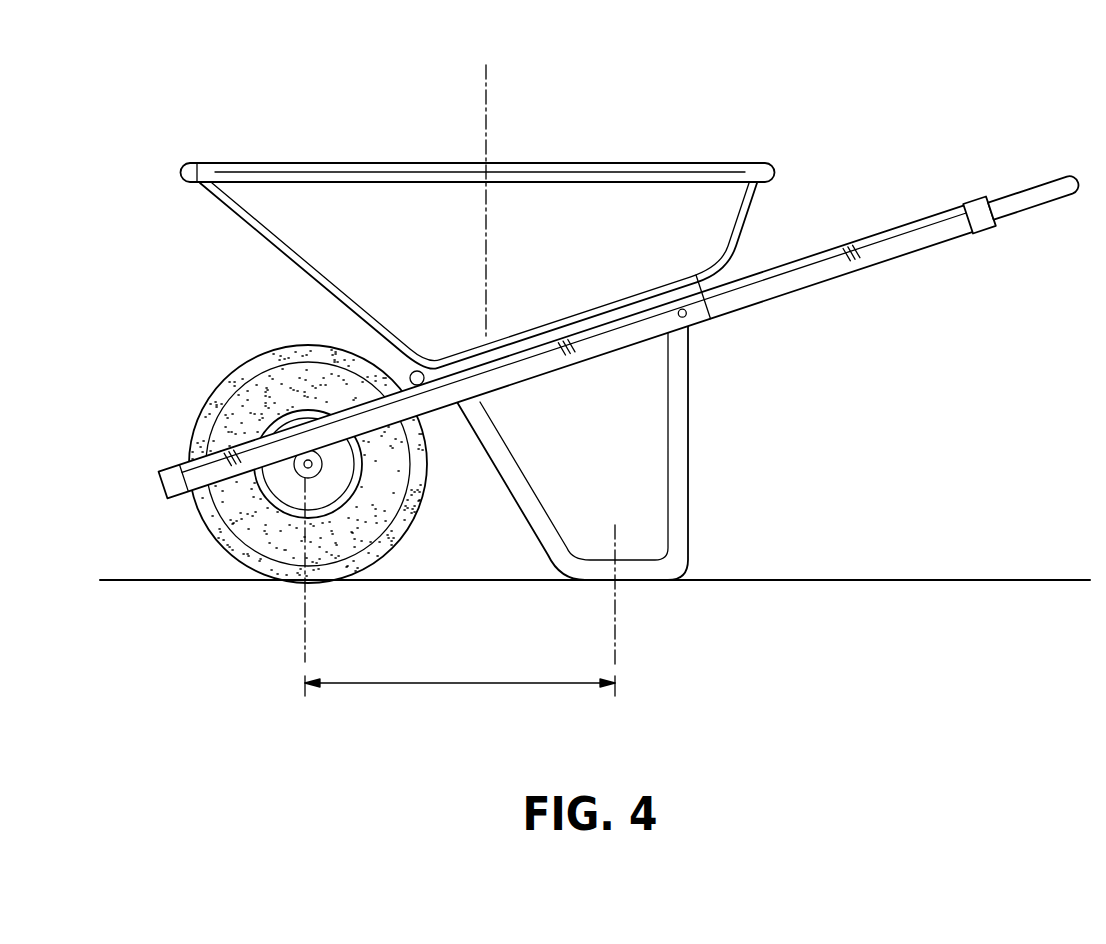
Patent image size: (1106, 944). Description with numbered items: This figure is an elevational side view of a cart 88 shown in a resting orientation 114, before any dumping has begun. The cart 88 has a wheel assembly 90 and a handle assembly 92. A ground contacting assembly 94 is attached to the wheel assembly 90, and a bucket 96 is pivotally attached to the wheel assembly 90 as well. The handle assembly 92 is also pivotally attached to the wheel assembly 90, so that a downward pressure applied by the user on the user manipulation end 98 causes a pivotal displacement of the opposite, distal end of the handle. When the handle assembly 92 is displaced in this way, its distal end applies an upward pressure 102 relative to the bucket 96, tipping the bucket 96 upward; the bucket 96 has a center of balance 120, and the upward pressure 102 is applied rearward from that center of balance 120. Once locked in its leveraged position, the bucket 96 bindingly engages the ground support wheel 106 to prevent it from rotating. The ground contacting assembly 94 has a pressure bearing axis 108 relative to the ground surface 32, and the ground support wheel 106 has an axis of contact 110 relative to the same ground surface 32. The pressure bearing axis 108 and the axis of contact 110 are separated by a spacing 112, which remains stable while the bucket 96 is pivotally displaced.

The cart 88 is at (827, 78).
The resting orientation 114 is at (873, 152).
The bucket 96 is at (277, 163).
The center of balance 120 is at (484, 97).
The upward pressure 102 is at (538, 336).
The handle assembly 92 is at (875, 266).
The user manipulation end 98 is at (1045, 205).
The wheel assembly 90 is at (197, 470).
The ground support wheel 106 is at (243, 363).
The ground contacting assembly 94 is at (689, 452).
The ground surface 32 is at (947, 576).
The axis of contact 110 is at (302, 640).
The pressure bearing axis 108 is at (623, 615).
The spacing 112 is at (446, 686).